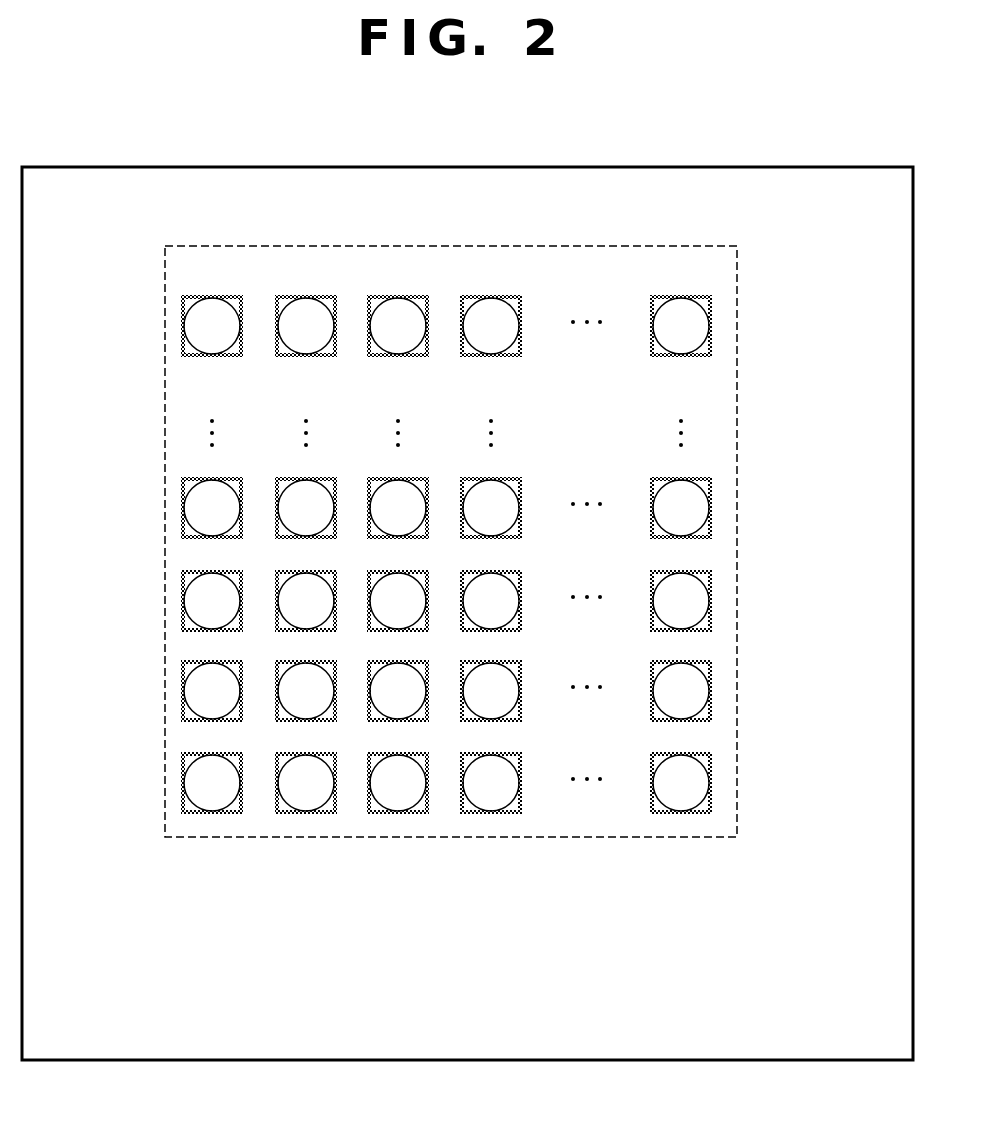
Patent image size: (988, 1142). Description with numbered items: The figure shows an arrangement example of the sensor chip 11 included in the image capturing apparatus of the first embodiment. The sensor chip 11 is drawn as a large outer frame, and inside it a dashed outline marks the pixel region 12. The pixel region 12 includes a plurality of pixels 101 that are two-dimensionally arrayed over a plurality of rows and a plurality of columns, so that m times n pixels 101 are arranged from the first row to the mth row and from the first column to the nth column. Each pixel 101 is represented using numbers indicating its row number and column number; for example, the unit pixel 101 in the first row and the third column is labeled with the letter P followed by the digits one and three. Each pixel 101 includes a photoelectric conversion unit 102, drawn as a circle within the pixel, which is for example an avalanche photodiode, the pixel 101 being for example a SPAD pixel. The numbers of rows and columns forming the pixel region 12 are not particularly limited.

The sensor chip 11 is at (829, 167).
The pixel region 12 is at (530, 246).
The pixel 101 is at (180, 797).
The photoelectric conversion unit 102 is at (211, 802).